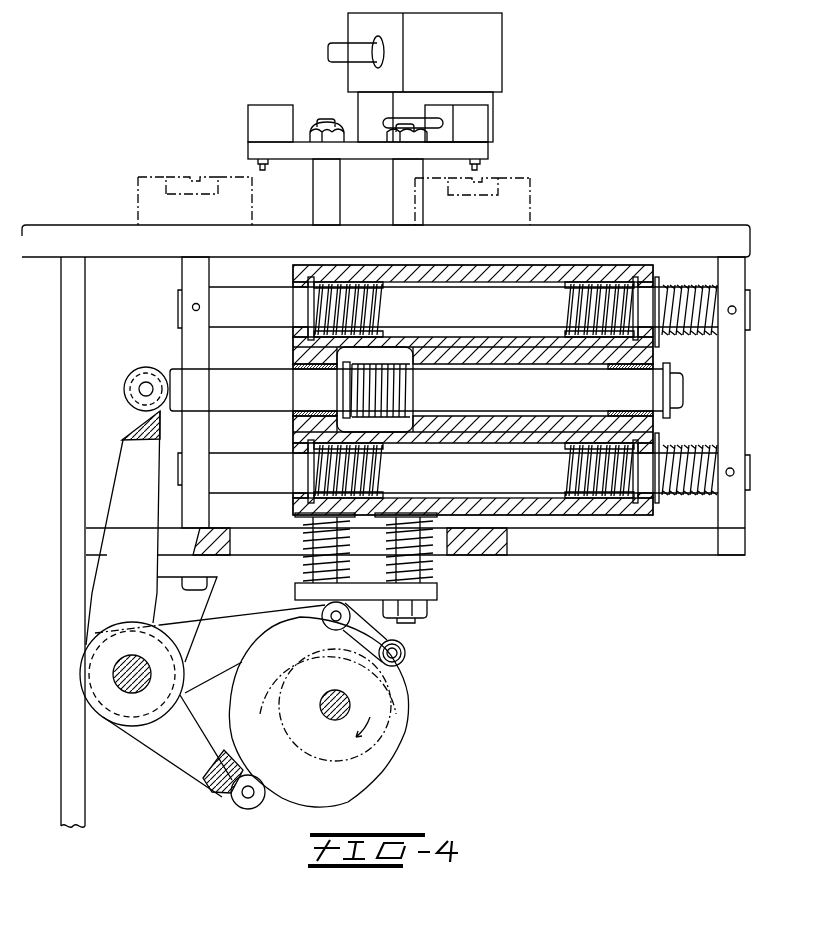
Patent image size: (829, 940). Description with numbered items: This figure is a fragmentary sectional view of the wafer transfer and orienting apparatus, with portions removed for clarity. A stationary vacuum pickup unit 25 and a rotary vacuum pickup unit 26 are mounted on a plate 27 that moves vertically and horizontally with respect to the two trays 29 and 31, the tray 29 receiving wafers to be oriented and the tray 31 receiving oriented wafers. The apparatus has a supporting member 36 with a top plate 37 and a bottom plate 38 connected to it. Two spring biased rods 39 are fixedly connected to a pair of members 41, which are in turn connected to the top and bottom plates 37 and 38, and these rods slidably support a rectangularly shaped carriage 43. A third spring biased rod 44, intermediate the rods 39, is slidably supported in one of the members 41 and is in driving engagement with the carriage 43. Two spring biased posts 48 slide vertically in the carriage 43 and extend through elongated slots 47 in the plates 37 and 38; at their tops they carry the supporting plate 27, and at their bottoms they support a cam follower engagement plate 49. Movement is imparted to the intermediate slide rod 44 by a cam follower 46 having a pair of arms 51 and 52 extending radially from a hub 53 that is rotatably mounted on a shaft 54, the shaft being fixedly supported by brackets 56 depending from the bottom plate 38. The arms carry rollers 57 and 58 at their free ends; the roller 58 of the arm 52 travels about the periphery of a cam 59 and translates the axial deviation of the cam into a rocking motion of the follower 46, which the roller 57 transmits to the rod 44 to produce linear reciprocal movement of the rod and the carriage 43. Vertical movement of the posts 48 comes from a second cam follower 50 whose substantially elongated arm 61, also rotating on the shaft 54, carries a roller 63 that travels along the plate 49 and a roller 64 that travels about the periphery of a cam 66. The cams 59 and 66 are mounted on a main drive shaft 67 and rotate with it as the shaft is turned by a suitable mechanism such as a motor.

The stationary vacuum pickup unit 25 is at (200, 131).
The rotary vacuum pickup unit 26 is at (518, 109).
The plate 27 is at (302, 134).
The tray 29 is at (181, 177).
The tray 31 is at (497, 178).
The supporting member 36 is at (85, 814).
The top plate 37 is at (585, 225).
The bottom plate 38 is at (645, 556).
The spring biased rod 39 is at (247, 291).
The member 41 is at (182, 344).
The carriage 43 is at (655, 350).
The spring biased rod 44 is at (262, 365).
The cam follower 46 is at (114, 454).
The elongated slot 47 is at (302, 223).
The spring biased post 48 is at (393, 189).
The cam follower engagement plate 49 is at (438, 594).
The cam follower 50 is at (257, 603).
The arm 51 is at (123, 420).
The arm 52 is at (181, 775).
The hub 53 is at (122, 623).
The shaft 54 is at (143, 666).
The bracket 56 is at (210, 599).
The roller 57 is at (134, 372).
The roller 58 is at (248, 810).
The cam 59 is at (378, 783).
The arm 61 is at (222, 681).
The roller 63 is at (347, 601).
The roller 64 is at (407, 654).
The cam 66 is at (272, 713).
The main drive shaft 67 is at (333, 722).